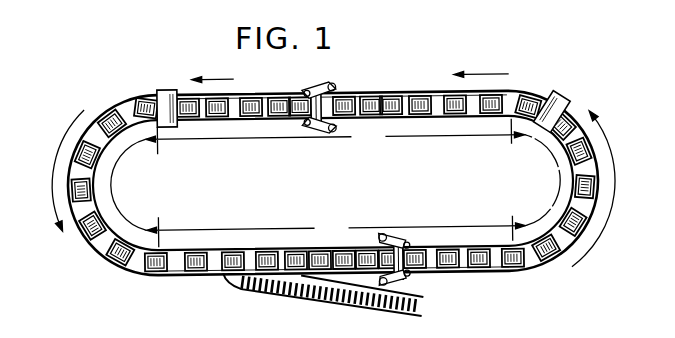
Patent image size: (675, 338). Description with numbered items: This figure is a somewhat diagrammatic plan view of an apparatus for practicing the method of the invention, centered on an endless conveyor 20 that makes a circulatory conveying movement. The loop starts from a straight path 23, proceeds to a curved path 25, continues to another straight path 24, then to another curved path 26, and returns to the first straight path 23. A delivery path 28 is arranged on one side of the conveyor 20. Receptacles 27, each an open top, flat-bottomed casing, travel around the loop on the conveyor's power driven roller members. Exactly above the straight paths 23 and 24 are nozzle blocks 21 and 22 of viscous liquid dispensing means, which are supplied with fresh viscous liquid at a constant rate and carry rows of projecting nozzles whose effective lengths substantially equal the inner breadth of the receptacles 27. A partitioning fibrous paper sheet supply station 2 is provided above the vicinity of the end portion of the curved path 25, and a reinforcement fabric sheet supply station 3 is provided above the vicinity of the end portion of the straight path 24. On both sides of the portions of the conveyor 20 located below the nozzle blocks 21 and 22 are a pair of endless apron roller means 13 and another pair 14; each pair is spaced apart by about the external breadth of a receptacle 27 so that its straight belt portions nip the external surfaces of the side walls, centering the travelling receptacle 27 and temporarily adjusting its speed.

The partitioning fibrous paper sheet supply station 2 is at (567, 80).
The reinforcement fabric sheet supply station 3 is at (163, 92).
The endless apron roller means 13 is at (400, 240).
The endless apron roller means 14 is at (327, 83).
The endless conveyor 20 is at (218, 272).
The nozzle block 21 is at (368, 250).
The nozzle block 22 is at (296, 98).
The straight path 23 is at (335, 231).
The straight path 24 is at (334, 137).
The curved path 25 is at (549, 180).
The curved path 26 is at (122, 185).
The receptacle 27 is at (452, 97).
The delivery path 28 is at (418, 307).